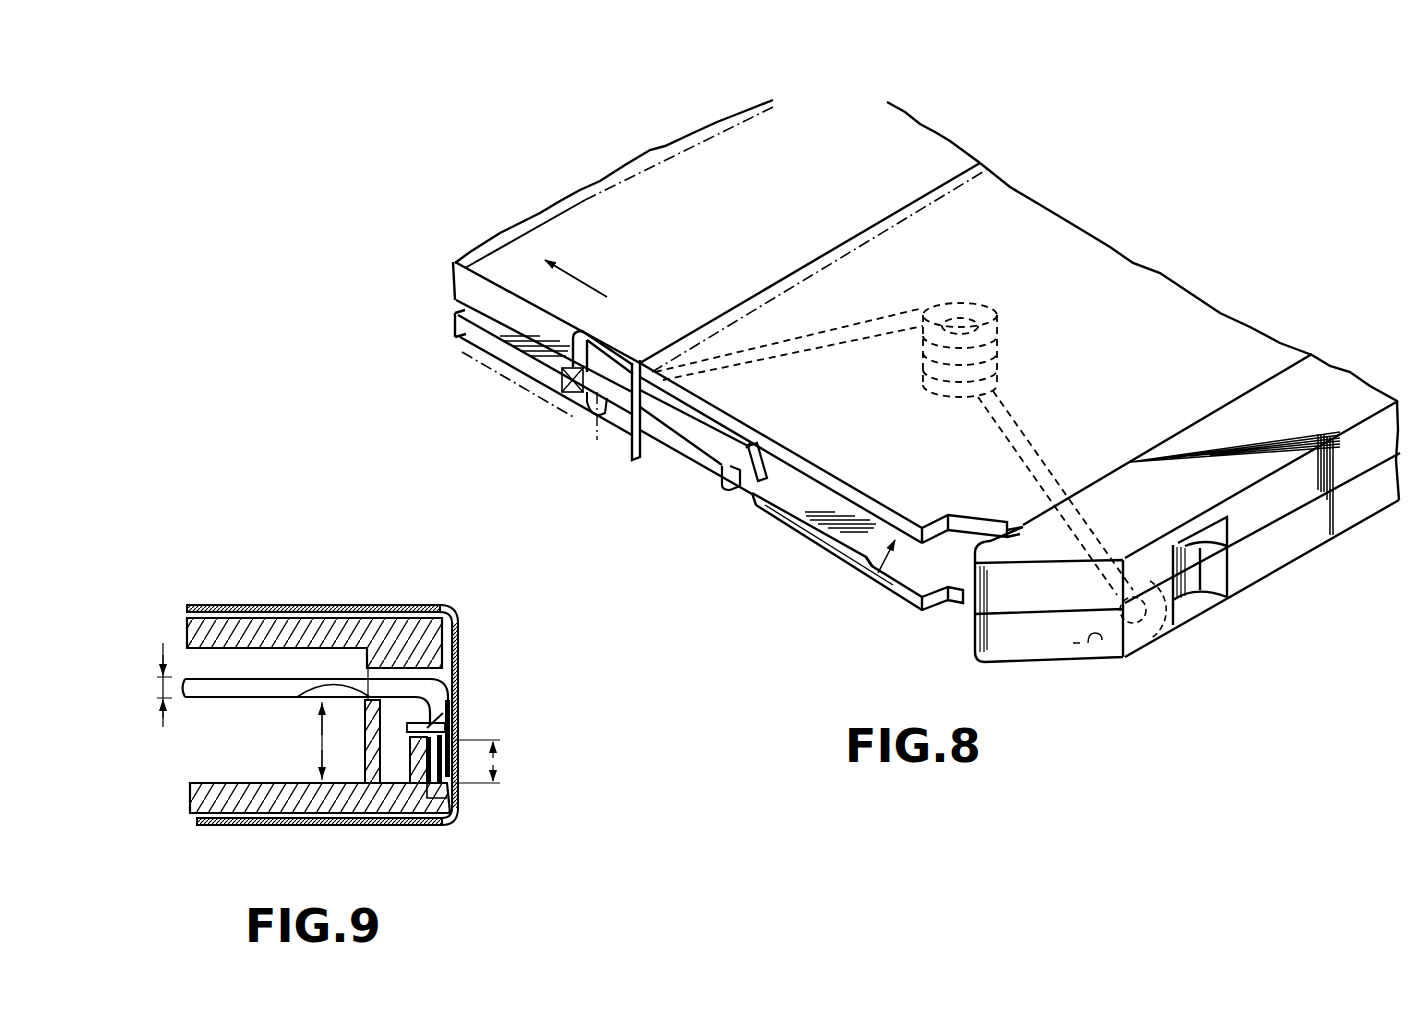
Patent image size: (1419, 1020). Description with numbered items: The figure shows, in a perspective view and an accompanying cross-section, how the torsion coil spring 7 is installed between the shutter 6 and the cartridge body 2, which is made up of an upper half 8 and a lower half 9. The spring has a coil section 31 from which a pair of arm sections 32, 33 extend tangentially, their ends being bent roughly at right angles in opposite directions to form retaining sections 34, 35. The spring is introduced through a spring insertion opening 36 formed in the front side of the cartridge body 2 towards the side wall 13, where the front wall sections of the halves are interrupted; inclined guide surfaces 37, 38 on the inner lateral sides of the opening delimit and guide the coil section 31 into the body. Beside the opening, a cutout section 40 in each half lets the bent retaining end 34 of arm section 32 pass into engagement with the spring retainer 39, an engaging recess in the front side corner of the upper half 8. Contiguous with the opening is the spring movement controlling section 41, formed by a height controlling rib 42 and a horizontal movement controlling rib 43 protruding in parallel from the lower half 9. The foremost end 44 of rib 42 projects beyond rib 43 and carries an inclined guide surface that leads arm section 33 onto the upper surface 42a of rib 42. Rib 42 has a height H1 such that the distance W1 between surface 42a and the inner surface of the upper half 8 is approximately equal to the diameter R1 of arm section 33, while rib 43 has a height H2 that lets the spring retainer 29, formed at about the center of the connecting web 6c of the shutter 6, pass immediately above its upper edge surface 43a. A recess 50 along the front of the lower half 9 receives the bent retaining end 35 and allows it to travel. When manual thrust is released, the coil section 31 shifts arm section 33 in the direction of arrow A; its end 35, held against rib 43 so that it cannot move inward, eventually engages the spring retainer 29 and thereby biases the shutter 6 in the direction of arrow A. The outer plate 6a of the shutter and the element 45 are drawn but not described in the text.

In FIG. 8, the cartridge body 2 is at (1187, 434).
In FIG. 8, the shutter 6 is at (630, 200).
In FIG. 9, the shutter 6 is at (279, 607).
In FIG. 8, the outer plate of cover 6a is at (703, 162).
In FIG. 9, the outer plate of cover 6a is at (343, 607).
In FIG. 8, the connecting web 6c is at (483, 360).
In FIG. 9, the connecting web 6c is at (459, 670).
In FIG. 8, the torsion coil spring 7 is at (894, 418).
In FIG. 8, the upper half 8 is at (1283, 497).
In FIG. 8, the lower half 9 is at (1272, 550).
In FIG. 8, the side wall 13 is at (1243, 575).
In FIG. 8, the spring retainer 29 is at (580, 400).
In FIG. 9, the spring retainer 29 is at (457, 703).
In FIG. 8, the coil section 31 is at (962, 312).
In FIG. 8, the arm section 32 is at (1017, 407).
In FIG. 8, the arm section 33 is at (842, 327).
In FIG. 9, the arm section 33 is at (210, 699).
In FIG. 8, the retaining section 34 is at (1145, 622).
In FIG. 8, the retaining section 35 is at (613, 413).
In FIG. 9, the retaining section 35 is at (436, 787).
In FIG. 8, the spring insertion opening 36 is at (873, 577).
In FIG. 8, the inclined guide surface 37 is at (832, 503).
In FIG. 8, the inclined guide surface 38 is at (810, 527).
In FIG. 8, the spring retainer 39 is at (1088, 643).
In FIG. 8, the cutout section 40 is at (967, 520).
In FIG. 8, the spring movement controlling section 41 is at (656, 466).
In FIG. 8, the height controlling rib 42 is at (672, 420).
In FIG. 9, the height controlling rib 42 is at (324, 778).
In FIG. 9, the upper surface 42a is at (297, 698).
In FIG. 8, the horizontal movement controlling rib 43 is at (689, 495).
In FIG. 9, the horizontal movement controlling rib 43 is at (457, 785).
In FIG. 8, the upper edge surface 43a is at (722, 467).
In FIG. 9, the upper edge surface 43a is at (455, 723).
In FIG. 8, the foremost end 44 is at (747, 473).
In FIG. 8, the engaging portion 45 is at (897, 603).
In FIG. 8, the recess 50 is at (552, 390).
In FIG. 9, the recess 50 is at (429, 780).
In FIG. 8, the arrow A is at (576, 275).
In FIG. 9, the distance W1 is at (346, 674).
In FIG. 9, the height H1 is at (340, 741).
In FIG. 9, the height H2 is at (491, 761).
In FIG. 9, the diameter R1 is at (151, 685).